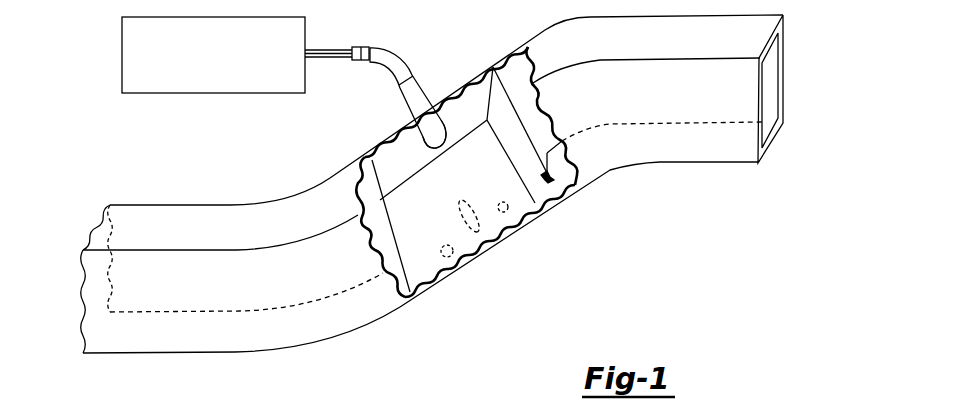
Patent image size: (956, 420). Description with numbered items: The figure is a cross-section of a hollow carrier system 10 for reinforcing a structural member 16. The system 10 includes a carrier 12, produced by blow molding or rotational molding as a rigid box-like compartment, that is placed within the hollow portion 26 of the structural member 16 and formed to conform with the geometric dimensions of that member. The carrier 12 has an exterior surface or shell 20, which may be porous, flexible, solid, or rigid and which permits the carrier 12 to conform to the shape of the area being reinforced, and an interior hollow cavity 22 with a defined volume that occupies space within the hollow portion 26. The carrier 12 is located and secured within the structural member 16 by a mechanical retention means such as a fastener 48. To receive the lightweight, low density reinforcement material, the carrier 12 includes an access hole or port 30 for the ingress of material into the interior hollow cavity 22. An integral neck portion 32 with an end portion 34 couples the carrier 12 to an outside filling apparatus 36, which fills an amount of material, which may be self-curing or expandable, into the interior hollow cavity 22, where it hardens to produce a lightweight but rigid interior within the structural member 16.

The system 10 is at (428, 362).
The carrier 12 is at (563, 190).
The structural member 16 is at (260, 353).
The exterior shell 20 is at (451, 257).
The interior hollow cavity 22 is at (500, 168).
The hollow portion 26 is at (770, 88).
The access hole 30 is at (448, 146).
The integral neck portion 32 is at (417, 82).
The end portion 34 is at (369, 48).
The outside filling apparatus 36 is at (213, 55).
The fastener 48 is at (477, 230).